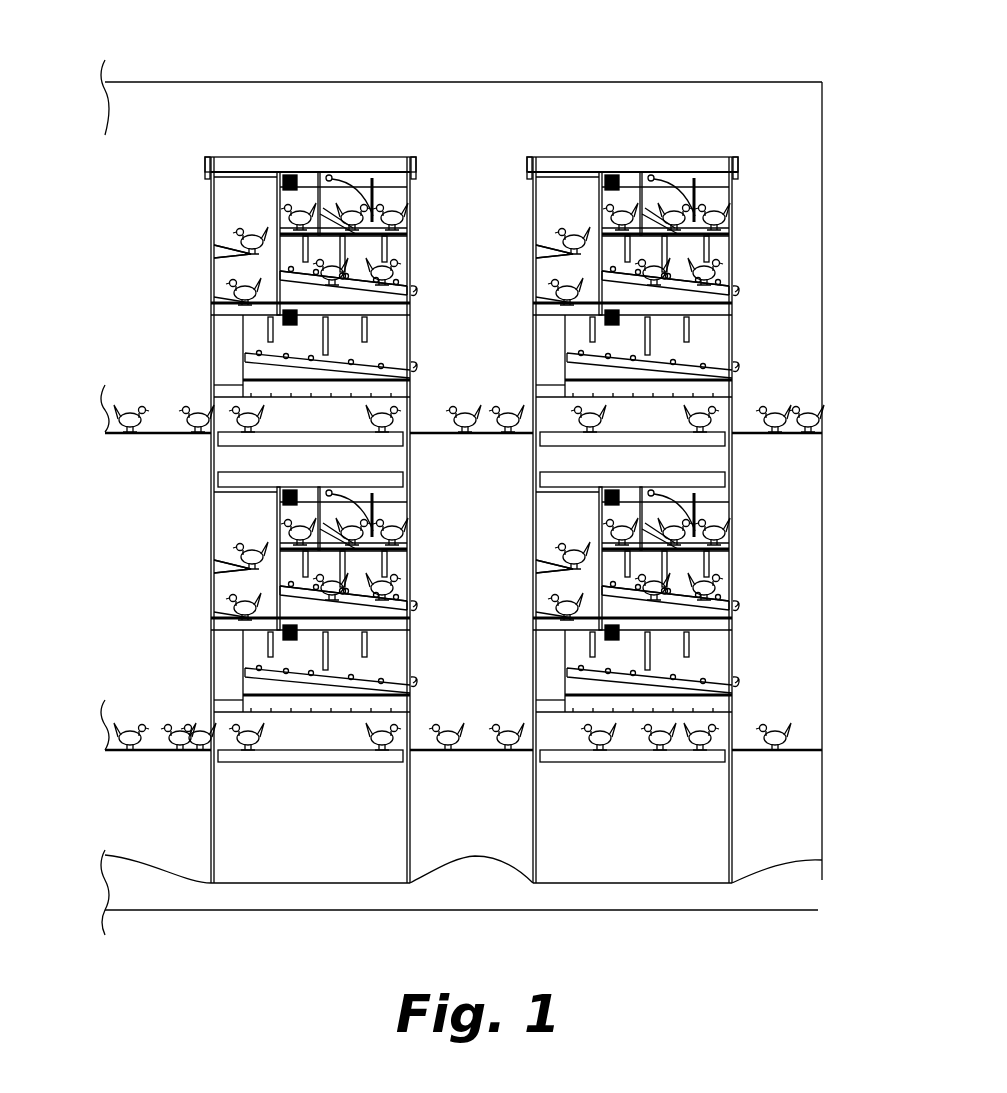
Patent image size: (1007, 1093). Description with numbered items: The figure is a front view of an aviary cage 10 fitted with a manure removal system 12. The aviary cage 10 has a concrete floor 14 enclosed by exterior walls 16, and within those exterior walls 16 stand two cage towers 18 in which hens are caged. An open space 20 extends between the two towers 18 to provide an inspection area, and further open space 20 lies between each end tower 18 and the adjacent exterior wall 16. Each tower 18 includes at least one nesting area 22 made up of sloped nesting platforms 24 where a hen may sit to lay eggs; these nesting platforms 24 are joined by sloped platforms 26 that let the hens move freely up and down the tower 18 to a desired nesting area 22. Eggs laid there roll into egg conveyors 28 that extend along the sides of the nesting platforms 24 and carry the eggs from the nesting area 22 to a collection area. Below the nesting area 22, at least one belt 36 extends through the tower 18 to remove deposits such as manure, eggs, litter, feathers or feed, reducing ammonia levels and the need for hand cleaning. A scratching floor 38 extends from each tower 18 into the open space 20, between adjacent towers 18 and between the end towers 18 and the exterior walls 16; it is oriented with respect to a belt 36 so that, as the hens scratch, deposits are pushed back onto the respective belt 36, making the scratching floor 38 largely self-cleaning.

The aviary cage 10 is at (612, 62).
The manure removal system 12 is at (437, 428).
The concrete floor 14 is at (468, 890).
The exterior walls 16 is at (822, 222).
The cage tower 18 is at (348, 150).
The open space 20 is at (134, 353).
The nesting area 22 is at (527, 182).
The nesting platform 24 is at (406, 284).
The sloped platform 26 is at (240, 258).
The egg conveyor 28 is at (419, 290).
The belt 36 is at (247, 157).
The scratching floor 38 is at (484, 436).